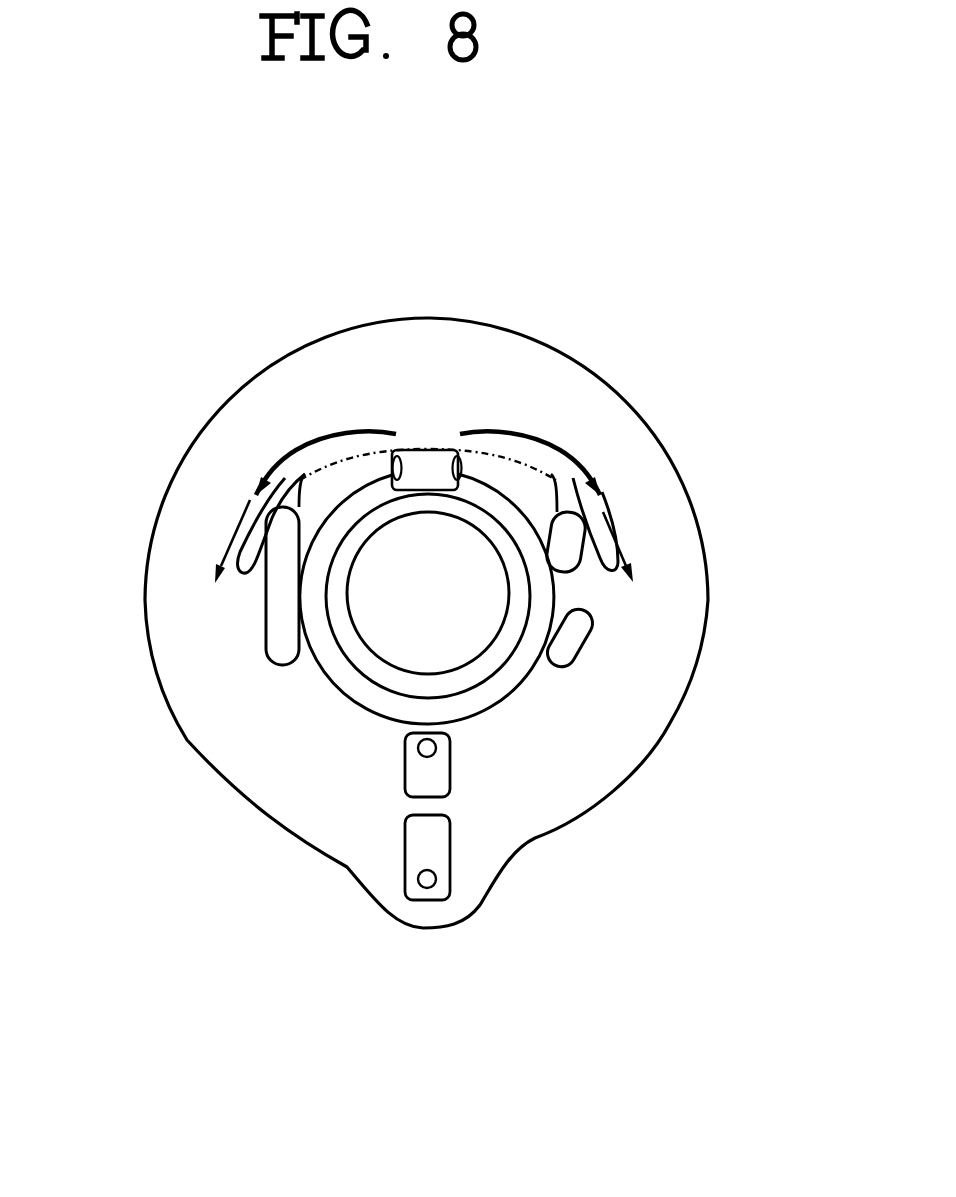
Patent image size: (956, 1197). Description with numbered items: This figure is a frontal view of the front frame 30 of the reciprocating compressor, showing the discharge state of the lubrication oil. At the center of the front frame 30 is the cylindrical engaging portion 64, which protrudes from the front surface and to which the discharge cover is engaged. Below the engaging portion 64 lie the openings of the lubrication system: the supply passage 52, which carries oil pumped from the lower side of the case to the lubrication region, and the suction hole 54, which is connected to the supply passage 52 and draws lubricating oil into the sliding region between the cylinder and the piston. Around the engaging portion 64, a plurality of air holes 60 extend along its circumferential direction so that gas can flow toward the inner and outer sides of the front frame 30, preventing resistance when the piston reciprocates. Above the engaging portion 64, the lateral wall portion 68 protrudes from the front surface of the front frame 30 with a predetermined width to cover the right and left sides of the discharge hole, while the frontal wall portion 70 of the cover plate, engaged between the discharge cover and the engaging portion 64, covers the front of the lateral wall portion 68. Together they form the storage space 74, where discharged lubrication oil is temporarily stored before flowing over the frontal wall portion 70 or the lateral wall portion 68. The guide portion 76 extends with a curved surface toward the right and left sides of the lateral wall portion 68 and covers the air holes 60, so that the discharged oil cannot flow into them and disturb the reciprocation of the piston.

The front frame 30 is at (648, 722).
The supply passage 52 is at (417, 880).
The suction hole 54 is at (418, 748).
The air hole 60 is at (290, 650).
The engaging portion 64 is at (343, 675).
The lateral wall portion 68 is at (452, 448).
The frontal wall portion 70 is at (505, 446).
The storage space 74 is at (400, 437).
The guide portion 76 is at (257, 519).